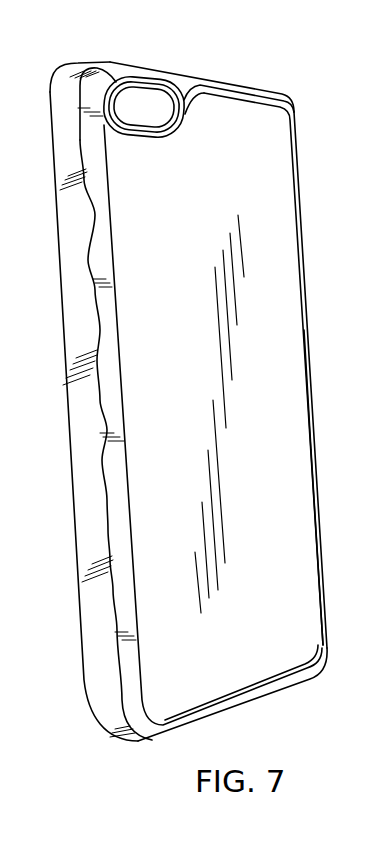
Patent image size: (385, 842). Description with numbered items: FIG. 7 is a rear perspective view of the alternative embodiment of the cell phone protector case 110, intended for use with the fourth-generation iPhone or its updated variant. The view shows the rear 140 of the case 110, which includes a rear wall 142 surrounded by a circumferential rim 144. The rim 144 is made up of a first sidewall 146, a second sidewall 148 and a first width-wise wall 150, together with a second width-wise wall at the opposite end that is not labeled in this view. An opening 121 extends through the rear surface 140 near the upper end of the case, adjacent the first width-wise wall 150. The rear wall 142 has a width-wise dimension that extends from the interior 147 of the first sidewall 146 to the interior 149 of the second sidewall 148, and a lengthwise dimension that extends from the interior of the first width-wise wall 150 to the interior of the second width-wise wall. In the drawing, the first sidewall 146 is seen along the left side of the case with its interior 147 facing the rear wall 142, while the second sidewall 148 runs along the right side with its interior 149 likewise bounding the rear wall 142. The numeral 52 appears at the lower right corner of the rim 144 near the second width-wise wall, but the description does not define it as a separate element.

The case 110 is at (316, 128).
The opening 121 is at (138, 113).
The rear 140 is at (273, 201).
The rear wall 142 is at (203, 308).
The circumferential rim 144 is at (300, 286).
The first sidewall 146 is at (87, 408).
The interior of first sidewall 147 is at (118, 314).
The second sidewall 148 is at (310, 393).
The interior of second sidewall 149 is at (316, 512).
The first width-wise wall 150 is at (83, 64).
The bottom lip 52 is at (308, 678).